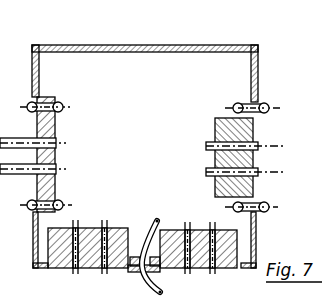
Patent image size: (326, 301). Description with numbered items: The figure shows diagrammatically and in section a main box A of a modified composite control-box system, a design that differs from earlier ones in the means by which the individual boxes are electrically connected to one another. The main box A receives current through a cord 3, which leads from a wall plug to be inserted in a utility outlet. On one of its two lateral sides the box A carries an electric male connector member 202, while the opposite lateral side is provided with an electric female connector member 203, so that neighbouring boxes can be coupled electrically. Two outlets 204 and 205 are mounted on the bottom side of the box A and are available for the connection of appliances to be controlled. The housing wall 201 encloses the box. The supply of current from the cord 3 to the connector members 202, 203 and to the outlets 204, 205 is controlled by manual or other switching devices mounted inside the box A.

The frame wall 201 is at (258, 66).
The electric male connector member 202 is at (56, 128).
The electric female connector member 203 is at (214, 163).
The outlet 204 is at (91, 228).
The outlet 205 is at (200, 228).
The cord 3 is at (138, 283).
The main box A is at (146, 45).